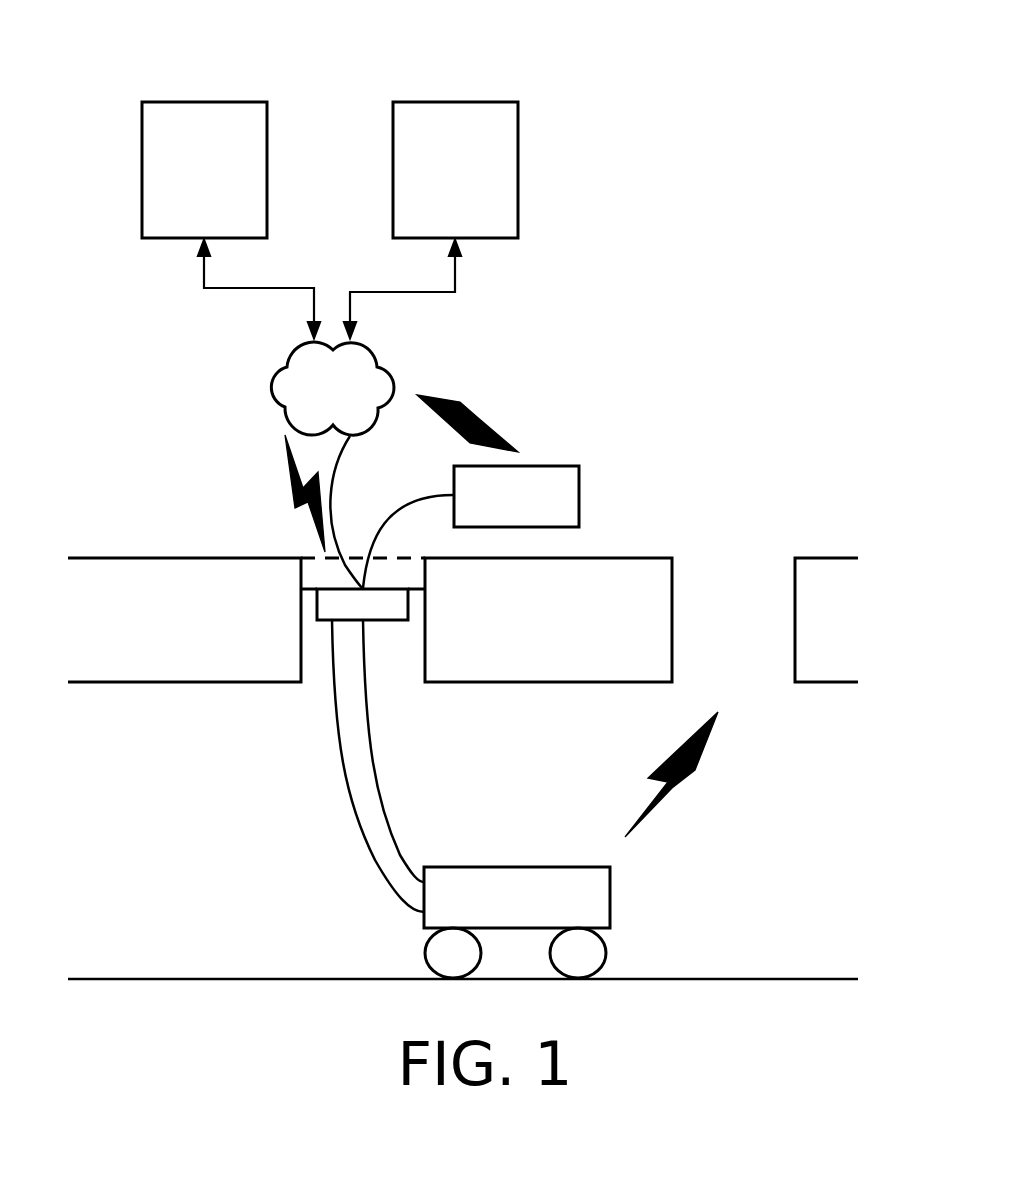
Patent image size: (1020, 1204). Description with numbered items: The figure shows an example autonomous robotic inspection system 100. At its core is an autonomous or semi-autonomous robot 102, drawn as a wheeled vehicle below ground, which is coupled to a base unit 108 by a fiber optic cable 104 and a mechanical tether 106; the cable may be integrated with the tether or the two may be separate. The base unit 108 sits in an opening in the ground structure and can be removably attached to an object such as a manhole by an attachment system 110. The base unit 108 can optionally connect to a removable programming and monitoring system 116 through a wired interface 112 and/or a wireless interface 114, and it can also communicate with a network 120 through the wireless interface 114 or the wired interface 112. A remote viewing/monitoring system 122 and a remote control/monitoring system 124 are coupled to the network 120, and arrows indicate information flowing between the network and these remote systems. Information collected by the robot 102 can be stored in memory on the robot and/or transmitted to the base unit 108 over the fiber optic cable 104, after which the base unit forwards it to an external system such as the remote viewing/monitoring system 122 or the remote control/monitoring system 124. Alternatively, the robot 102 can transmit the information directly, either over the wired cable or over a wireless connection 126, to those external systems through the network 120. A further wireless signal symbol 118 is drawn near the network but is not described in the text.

The autonomous robotic inspection system 100 is at (172, 25).
The robot 102 is at (517, 888).
The fiber optic cable 104 is at (402, 751).
The mechanical tether 106 is at (352, 766).
The base unit 108 is at (363, 636).
The attachment system 110 is at (463, 620).
The wired interface 112 is at (391, 512).
The wireless interface 114 is at (271, 493).
The removable programming and monitoring system 116 is at (549, 487).
The wireless signal 118 is at (480, 411).
The network 120 is at (329, 337).
The remote viewing/monitoring system 122 is at (236, 170).
The remote control/monitoring system 124 is at (487, 170).
The wireless connection 126 is at (678, 784).